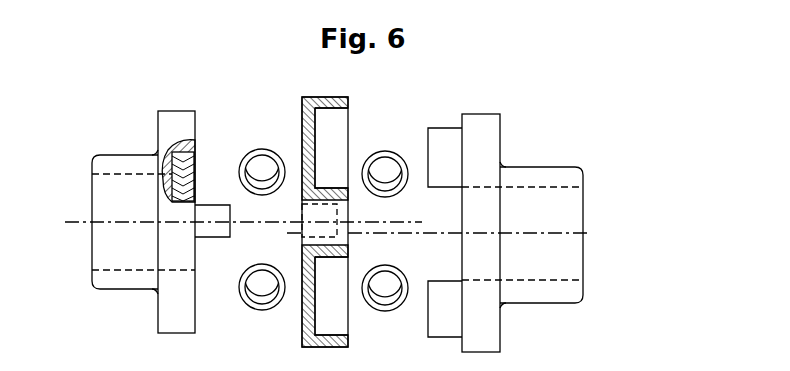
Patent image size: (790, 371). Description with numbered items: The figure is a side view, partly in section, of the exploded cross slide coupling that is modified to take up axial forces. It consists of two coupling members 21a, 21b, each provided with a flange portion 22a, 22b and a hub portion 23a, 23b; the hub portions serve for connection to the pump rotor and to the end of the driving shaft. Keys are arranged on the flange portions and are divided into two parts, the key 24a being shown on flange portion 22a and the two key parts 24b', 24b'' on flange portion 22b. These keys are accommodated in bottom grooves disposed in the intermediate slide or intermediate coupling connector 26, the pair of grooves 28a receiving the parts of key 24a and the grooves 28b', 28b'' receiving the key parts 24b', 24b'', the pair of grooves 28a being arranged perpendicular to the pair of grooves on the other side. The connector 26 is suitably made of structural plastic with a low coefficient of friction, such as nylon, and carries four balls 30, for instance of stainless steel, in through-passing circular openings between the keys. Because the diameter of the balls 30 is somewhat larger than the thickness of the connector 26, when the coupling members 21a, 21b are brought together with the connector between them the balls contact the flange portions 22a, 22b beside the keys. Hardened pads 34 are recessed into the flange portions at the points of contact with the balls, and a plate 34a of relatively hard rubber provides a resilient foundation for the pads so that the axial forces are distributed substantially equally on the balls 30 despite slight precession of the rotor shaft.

The coupling member 21a is at (155, 225).
The coupling member 21b is at (485, 233).
The flange portion 22a is at (162, 313).
The flange portion 22b is at (488, 318).
The hub portion 23a is at (112, 281).
The hub portion 23b is at (546, 299).
The key 24a is at (208, 232).
The key part 24b' is at (423, 154).
The key part 24b'' is at (423, 314).
The intermediate coupling connector 26 is at (324, 225).
The pair of grooves 28a is at (302, 224).
The bottom groove 28b' is at (353, 144).
The bottom groove 28b'' is at (354, 296).
The balls 30 is at (255, 263).
The hardened pads 34 is at (190, 188).
The resilient plate 34a is at (192, 141).